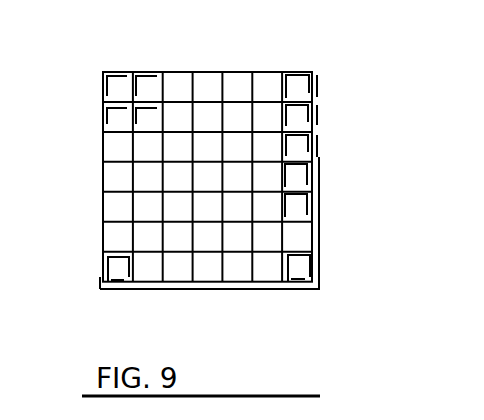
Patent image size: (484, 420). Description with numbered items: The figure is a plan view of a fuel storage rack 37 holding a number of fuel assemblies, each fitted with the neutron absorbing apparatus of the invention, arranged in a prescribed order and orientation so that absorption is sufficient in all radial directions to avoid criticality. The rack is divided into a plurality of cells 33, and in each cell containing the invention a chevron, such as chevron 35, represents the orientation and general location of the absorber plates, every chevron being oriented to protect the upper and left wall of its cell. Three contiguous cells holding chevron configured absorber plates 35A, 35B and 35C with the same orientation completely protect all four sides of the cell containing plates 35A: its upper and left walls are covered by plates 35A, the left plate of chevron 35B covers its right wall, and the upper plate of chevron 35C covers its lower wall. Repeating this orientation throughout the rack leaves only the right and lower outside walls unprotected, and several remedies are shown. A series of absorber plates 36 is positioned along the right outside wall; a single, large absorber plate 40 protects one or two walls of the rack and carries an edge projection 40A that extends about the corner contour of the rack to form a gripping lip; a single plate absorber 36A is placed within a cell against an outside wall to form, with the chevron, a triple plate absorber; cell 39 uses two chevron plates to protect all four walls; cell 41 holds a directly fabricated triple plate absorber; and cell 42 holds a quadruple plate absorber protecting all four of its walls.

The cells 33 is at (303, 238).
The chevron 35 is at (142, 108).
The chevron configured absorber plates 35A is at (122, 75).
The chevron configured absorber plates 35B is at (145, 75).
The chevron configured absorber plates 35C is at (105, 118).
The absorber plates 36 is at (318, 148).
The single plate absorber 36A is at (308, 173).
The fuel storage rack 37 is at (103, 183).
The cell 39 is at (123, 282).
The plate 40 is at (320, 271).
The edge projection 40A is at (100, 282).
The cell 41 is at (303, 199).
The cell 42 is at (305, 283).